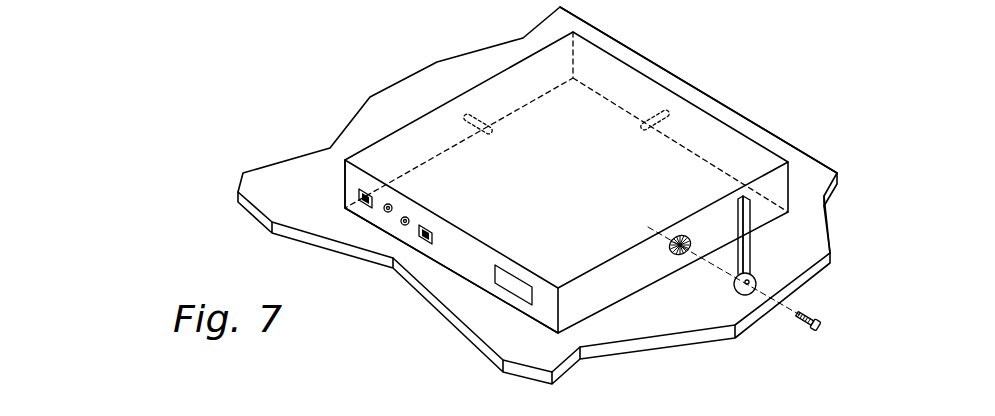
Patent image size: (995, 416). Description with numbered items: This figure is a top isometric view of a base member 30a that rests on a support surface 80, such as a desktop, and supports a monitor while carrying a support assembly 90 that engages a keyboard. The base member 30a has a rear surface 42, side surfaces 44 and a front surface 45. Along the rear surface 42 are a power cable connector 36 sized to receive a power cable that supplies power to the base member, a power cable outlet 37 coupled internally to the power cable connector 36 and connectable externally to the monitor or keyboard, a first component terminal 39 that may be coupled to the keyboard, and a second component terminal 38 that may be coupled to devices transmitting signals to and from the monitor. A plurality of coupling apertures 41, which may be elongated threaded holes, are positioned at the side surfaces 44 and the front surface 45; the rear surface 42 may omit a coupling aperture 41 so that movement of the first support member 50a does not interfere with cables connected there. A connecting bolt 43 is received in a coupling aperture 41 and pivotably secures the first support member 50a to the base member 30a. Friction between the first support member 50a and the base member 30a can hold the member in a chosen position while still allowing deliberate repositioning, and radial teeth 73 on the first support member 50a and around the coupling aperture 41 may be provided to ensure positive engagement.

The base member 30a is at (414, 107).
The power cable connector 36 is at (432, 243).
The power cable outlet 37 is at (368, 207).
The second component terminal 38 is at (409, 219).
The first component terminal 39 is at (391, 205).
The coupling aperture 41 is at (482, 118).
The rear surface 42 is at (540, 310).
The connecting bolt 43 is at (823, 326).
The side surface 44 is at (343, 186).
The front surface 45 is at (764, 124).
The first support member 50a is at (751, 250).
The radial teeth 73 is at (697, 235).
The support surface 80 is at (282, 205).
The support assembly 90 is at (772, 268).